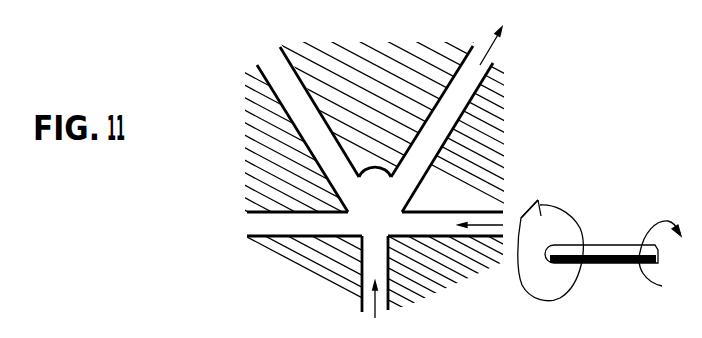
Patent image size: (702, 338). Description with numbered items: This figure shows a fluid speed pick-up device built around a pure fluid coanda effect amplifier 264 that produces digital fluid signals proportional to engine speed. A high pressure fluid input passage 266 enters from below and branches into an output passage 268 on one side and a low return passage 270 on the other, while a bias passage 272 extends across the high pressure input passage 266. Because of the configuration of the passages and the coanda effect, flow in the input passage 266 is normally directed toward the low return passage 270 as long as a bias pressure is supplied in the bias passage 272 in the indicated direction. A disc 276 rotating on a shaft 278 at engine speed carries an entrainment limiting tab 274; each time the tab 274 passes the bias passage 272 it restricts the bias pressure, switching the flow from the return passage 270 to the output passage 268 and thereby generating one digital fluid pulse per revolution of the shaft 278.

The pure fluid coanda effect amplifier 264 is at (243, 172).
The high pressure fluid input passage 266 is at (362, 278).
The output passage 268 is at (470, 99).
The low return passage 270 is at (282, 91).
The bias passage 272 is at (296, 237).
The entrainment limiting tab 274 is at (540, 201).
The disc 276 is at (519, 281).
The shaft 278 is at (617, 265).